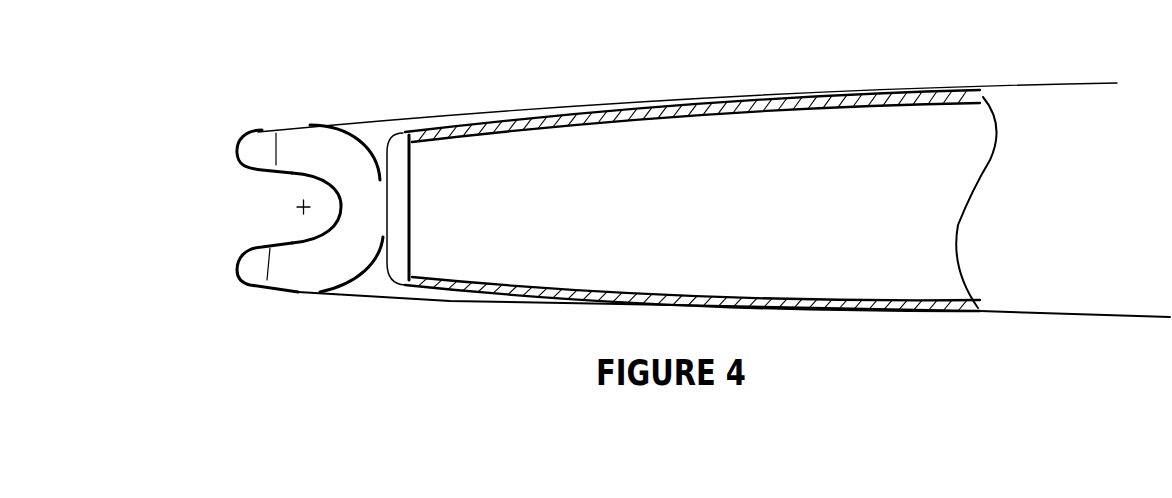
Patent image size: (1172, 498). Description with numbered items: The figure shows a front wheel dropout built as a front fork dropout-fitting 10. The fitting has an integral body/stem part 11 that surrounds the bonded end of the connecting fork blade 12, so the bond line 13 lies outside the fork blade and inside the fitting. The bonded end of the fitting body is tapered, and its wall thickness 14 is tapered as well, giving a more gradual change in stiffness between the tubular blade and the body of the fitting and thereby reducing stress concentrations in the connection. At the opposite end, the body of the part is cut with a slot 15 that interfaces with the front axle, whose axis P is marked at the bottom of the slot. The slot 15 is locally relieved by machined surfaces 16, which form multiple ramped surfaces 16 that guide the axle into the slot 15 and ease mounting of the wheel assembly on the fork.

The front fork dropout-fitting 10 is at (458, 75).
The integral body/stem part 11 is at (371, 138).
The connecting fork blade 12 is at (813, 100).
The bond line 13 is at (555, 115).
The wall thickness 14 is at (452, 295).
The slot 15 is at (304, 173).
The machined surfaces 16 is at (263, 143).
The axis P is at (293, 200).